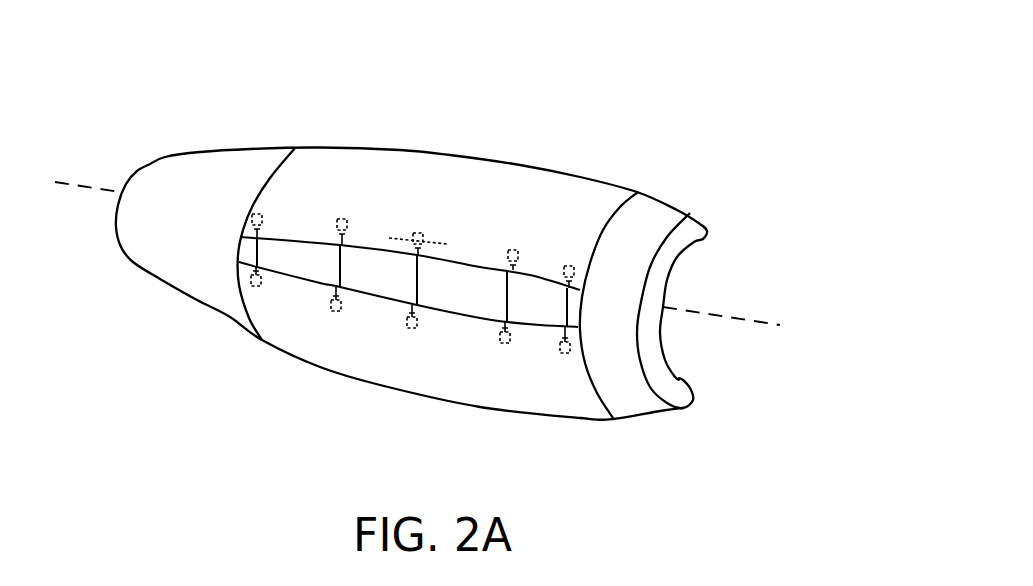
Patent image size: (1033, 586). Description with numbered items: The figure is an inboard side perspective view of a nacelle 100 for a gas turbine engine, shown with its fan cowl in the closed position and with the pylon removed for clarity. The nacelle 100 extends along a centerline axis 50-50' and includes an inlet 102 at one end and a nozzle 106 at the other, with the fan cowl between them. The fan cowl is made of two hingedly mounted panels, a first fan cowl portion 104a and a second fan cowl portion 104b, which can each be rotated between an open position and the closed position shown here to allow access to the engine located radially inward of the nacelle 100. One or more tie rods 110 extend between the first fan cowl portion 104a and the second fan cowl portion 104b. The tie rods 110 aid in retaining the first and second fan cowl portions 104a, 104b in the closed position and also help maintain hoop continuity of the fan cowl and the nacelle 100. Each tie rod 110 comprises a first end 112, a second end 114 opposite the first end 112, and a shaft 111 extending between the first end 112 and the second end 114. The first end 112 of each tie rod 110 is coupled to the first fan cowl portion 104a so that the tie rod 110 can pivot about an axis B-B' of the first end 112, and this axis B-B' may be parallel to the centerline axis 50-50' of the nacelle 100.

The nacelle 100 is at (608, 64).
The inlet 102 is at (677, 210).
The first fan cowl portion 104a is at (380, 173).
The second fan cowl portion 104b is at (313, 345).
The nozzle 106 is at (223, 150).
The centerline axis 50 is at (745, 285).
The centerline axis 50' is at (87, 148).
The tie rod 110 is at (248, 260).
The shaft 111 is at (340, 263).
The first end 112 is at (262, 213).
The second end 114 is at (330, 305).